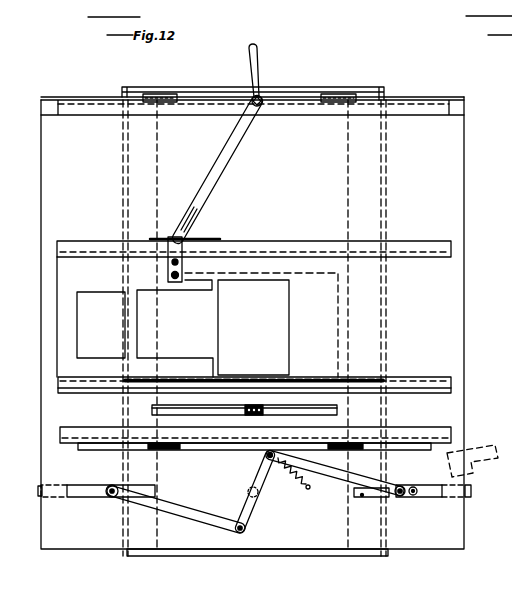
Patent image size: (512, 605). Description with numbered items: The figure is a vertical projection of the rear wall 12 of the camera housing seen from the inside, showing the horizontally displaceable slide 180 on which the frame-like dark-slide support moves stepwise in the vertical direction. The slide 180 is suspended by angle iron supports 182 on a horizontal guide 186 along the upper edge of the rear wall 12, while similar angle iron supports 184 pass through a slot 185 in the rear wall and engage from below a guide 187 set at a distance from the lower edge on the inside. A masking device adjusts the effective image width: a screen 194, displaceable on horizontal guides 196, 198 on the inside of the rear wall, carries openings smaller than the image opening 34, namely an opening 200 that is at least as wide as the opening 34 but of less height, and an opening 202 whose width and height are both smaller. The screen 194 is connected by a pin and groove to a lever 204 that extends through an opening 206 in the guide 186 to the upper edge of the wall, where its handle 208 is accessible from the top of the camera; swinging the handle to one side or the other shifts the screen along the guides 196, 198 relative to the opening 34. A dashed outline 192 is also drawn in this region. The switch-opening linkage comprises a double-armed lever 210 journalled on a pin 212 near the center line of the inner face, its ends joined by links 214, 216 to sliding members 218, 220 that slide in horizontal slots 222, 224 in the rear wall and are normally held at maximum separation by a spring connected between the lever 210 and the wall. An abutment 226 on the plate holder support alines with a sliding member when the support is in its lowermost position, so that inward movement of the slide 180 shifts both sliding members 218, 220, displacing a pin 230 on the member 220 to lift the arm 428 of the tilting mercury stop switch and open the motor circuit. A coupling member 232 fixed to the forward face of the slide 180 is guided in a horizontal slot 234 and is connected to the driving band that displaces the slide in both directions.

The rear wall 12 is at (458, 418).
The opening 34 is at (272, 325).
The slide 180 is at (308, 558).
The angle iron supports 182 is at (158, 96).
The angle iron supports 184 is at (178, 450).
The slot 185 is at (197, 451).
The horizontal guide 186 is at (413, 103).
The guide 187 is at (226, 446).
The dashed plate 192 is at (338, 303).
The screen 194 is at (62, 276).
The horizontal guide 196 is at (78, 243).
The horizontal guide 198 is at (102, 392).
The opening 200 is at (190, 303).
The opening 202 is at (108, 302).
The lever 204 is at (225, 165).
The opening 206 is at (262, 104).
The handle 208 is at (253, 66).
The double-armed lever 210 is at (250, 493).
The pin 212 is at (261, 495).
The link 214 is at (190, 506).
The link 216 is at (363, 478).
The sliding member 218 is at (79, 497).
The sliding member 220 is at (435, 498).
The horizontal slot 222 is at (144, 486).
The horizontal slot 224 is at (362, 497).
The abutment 226 is at (300, 490).
The pin 230 is at (406, 498).
The coupling member 232 is at (254, 404).
The horizontal slot 234 is at (338, 411).
The arm 428 is at (488, 463).